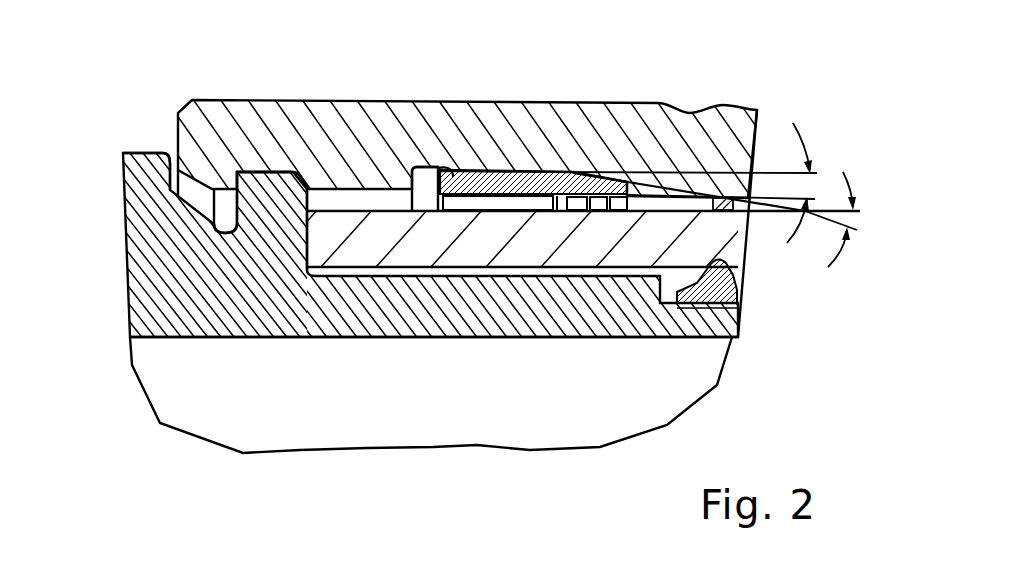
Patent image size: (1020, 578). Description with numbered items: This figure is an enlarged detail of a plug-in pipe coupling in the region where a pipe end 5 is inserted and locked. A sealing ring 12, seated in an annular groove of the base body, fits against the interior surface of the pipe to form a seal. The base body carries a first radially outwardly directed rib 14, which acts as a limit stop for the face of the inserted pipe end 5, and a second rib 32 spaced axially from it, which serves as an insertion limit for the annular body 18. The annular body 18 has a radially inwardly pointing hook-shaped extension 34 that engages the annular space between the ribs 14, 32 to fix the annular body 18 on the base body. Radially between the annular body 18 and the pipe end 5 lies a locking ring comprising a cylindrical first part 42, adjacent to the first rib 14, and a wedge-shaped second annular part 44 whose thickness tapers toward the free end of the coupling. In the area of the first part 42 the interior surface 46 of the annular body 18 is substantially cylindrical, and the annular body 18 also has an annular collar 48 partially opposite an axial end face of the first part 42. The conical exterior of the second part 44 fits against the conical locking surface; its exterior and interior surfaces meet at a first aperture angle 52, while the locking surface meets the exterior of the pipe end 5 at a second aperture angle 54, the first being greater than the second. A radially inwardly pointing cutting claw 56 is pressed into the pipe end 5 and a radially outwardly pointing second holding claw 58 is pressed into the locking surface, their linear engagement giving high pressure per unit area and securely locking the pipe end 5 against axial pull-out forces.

The pipe end 5 is at (365, 247).
The sealing ring 12 is at (443, 302).
The first radially outwardly directed rib 14 is at (262, 205).
The annular body 18 is at (318, 145).
The second rib 32 is at (133, 197).
The hook-shaped extension 34 is at (166, 130).
The first part of the locking ring 42 is at (492, 188).
The second annular part of the locking ring 44 is at (578, 192).
The interior surface of the annular body 46 is at (437, 168).
The annular collar 48 is at (420, 166).
The first aperture angle 52 is at (706, 148).
The second aperture angle 54 is at (822, 239).
The holding or cutting claw 56 is at (578, 206).
The second holding claw 58 is at (627, 211).